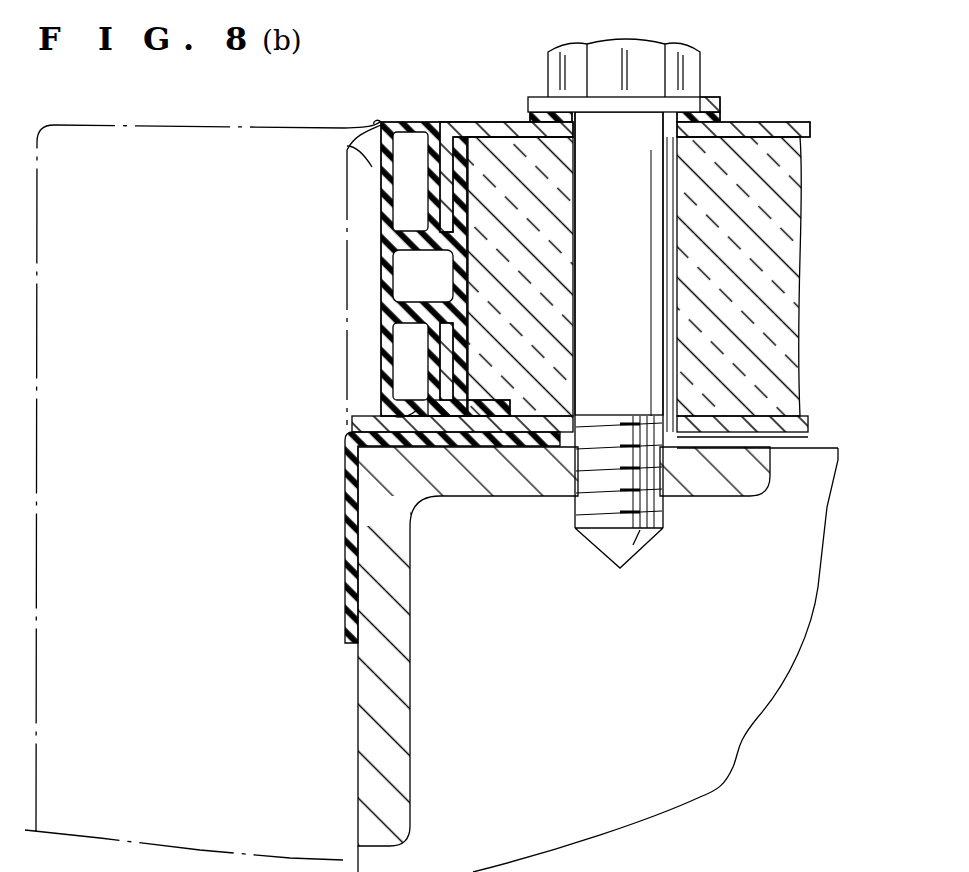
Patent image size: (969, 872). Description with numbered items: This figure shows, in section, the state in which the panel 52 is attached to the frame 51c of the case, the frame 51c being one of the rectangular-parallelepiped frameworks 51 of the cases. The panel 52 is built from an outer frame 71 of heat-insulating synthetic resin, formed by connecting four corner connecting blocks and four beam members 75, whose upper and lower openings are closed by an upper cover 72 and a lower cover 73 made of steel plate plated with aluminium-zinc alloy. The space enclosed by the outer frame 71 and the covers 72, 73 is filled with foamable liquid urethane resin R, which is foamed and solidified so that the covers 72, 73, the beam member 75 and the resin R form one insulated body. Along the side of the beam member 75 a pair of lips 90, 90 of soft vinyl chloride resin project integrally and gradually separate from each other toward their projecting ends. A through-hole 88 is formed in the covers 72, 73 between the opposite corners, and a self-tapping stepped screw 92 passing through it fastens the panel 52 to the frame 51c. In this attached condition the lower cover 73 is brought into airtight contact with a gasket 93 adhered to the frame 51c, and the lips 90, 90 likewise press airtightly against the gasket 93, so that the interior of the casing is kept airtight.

The panel 52 is at (207, 124).
The beam member 75 is at (386, 269).
The outer frame 71 is at (378, 262).
The lip 90 is at (374, 121).
The upper cover 72 is at (793, 130).
The urethane resin R is at (772, 287).
The lower cover 73 is at (788, 428).
The gasket 93 is at (343, 513).
The frame 51c is at (598, 659).
The frame 51 is at (398, 678).
The through-hole 88 is at (668, 130).
The self-tapping stepped screw 92 is at (552, 58).